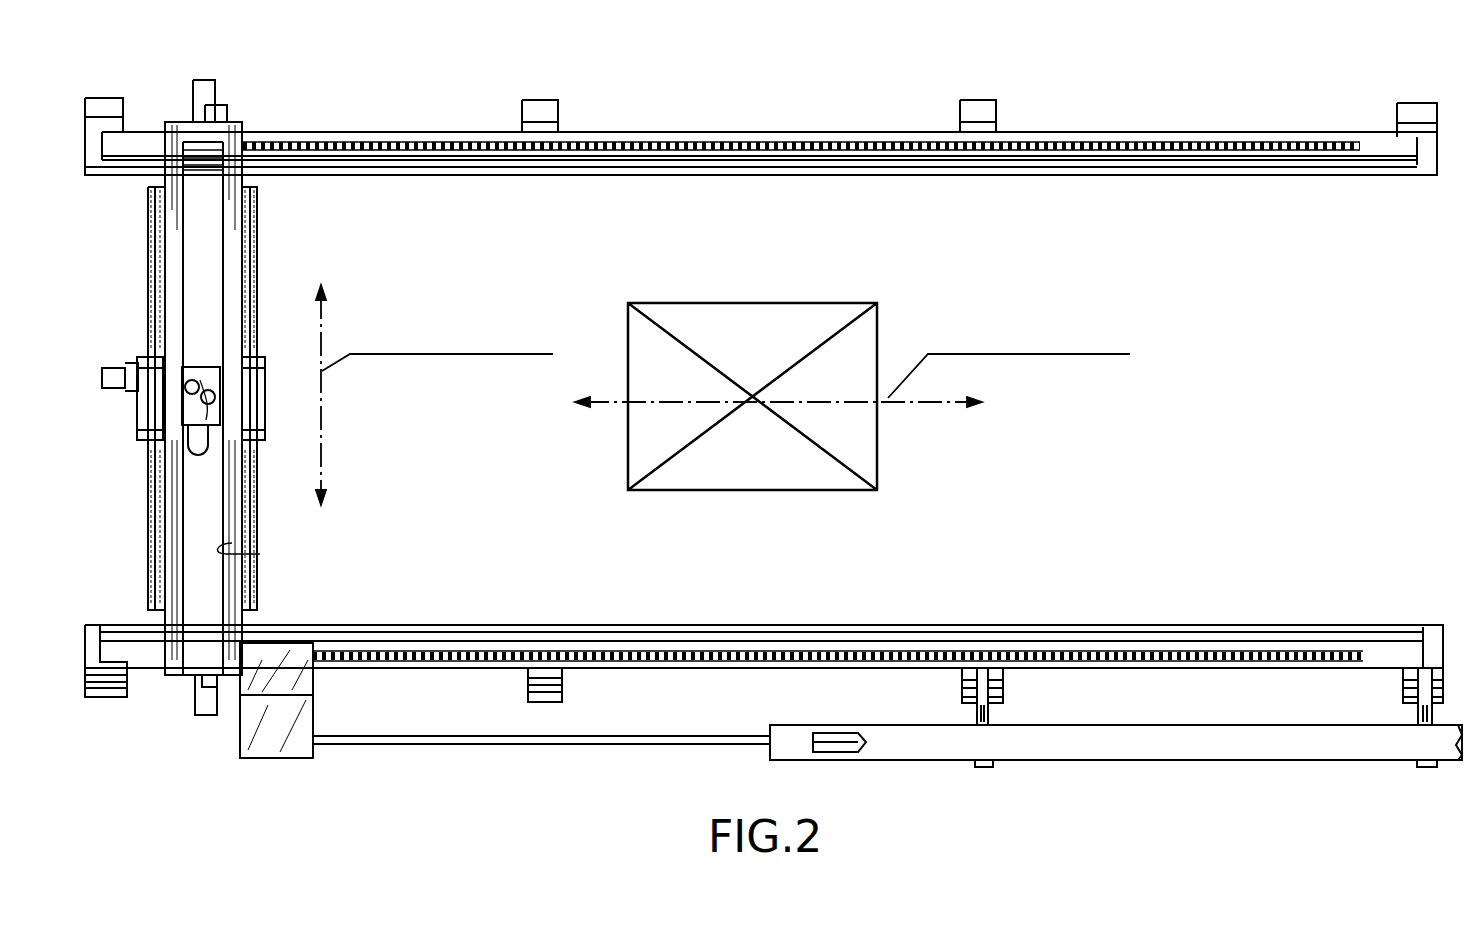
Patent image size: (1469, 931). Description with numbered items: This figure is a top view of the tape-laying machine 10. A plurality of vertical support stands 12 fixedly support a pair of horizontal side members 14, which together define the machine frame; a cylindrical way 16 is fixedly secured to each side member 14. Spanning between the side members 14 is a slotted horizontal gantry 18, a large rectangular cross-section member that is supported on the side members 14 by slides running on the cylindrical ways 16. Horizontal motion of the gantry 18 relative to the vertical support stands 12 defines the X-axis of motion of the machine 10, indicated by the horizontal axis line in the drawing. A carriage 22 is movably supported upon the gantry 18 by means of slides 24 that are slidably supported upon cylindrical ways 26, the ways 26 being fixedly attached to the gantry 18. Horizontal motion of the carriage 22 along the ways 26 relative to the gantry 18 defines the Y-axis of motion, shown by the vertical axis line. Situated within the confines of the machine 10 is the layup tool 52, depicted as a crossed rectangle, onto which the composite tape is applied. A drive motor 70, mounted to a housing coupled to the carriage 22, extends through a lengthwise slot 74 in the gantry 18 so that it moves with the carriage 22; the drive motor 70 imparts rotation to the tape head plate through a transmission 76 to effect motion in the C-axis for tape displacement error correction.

The tape-laying machine 10 is at (773, 461).
The vertical support stands 12 is at (103, 98).
The horizontal side members 14 is at (742, 131).
The cylindrical way 16 is at (897, 160).
The gantry 18 is at (232, 293).
The carriage 22 is at (128, 448).
The slides 24 is at (137, 432).
The cylindrical ways 26 is at (258, 320).
The layup tool 52 is at (800, 319).
The drive motor 70 is at (192, 378).
The lengthwise slot 74 is at (255, 551).
The transmission 76 is at (203, 450).